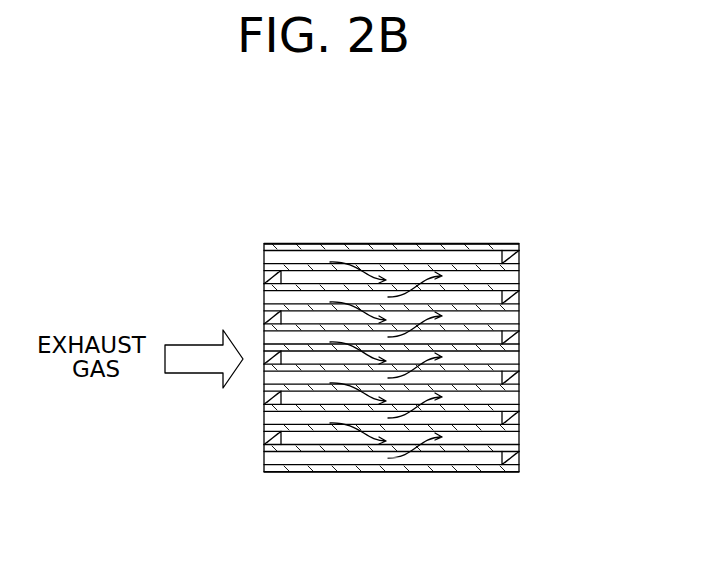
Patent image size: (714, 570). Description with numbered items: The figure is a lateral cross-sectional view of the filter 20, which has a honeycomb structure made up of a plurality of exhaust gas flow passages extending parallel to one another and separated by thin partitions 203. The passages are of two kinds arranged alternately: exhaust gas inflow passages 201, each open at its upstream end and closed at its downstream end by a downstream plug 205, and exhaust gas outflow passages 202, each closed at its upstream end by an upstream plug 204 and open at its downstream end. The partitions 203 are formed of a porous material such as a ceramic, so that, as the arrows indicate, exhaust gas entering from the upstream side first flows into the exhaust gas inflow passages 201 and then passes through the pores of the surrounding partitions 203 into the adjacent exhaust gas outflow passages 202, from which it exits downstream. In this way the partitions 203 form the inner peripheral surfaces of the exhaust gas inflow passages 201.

The filter 20 is at (499, 170).
The exhaust gas inflow passage 201 is at (335, 455).
The exhaust gas outflow passage 202 is at (318, 277).
The partition 203 is at (393, 257).
The upstream plug 204 is at (263, 317).
The downstream plug 205 is at (520, 297).